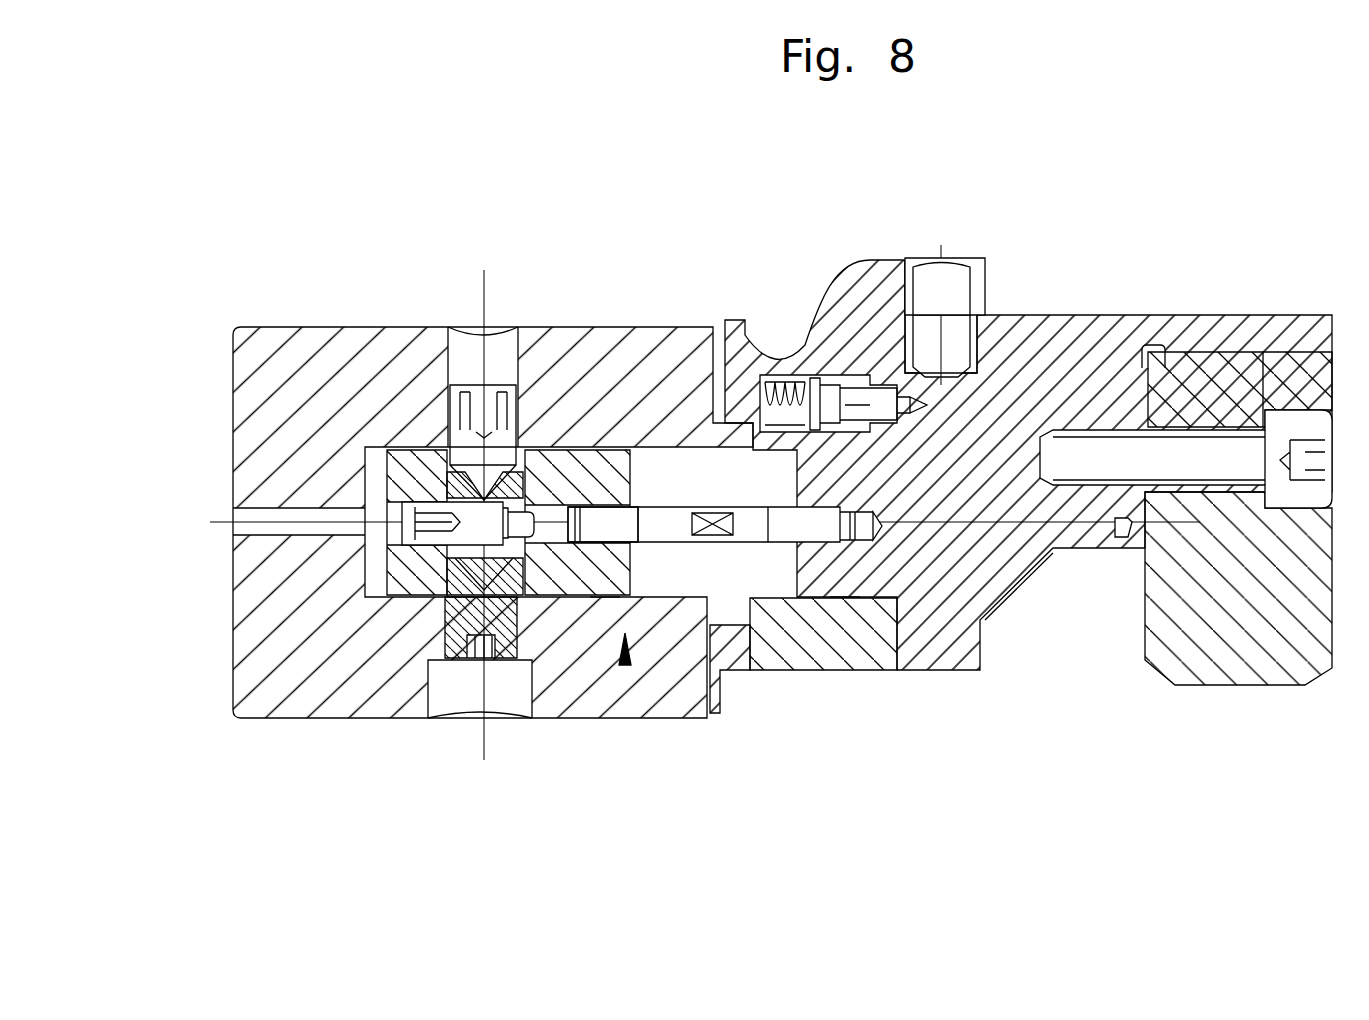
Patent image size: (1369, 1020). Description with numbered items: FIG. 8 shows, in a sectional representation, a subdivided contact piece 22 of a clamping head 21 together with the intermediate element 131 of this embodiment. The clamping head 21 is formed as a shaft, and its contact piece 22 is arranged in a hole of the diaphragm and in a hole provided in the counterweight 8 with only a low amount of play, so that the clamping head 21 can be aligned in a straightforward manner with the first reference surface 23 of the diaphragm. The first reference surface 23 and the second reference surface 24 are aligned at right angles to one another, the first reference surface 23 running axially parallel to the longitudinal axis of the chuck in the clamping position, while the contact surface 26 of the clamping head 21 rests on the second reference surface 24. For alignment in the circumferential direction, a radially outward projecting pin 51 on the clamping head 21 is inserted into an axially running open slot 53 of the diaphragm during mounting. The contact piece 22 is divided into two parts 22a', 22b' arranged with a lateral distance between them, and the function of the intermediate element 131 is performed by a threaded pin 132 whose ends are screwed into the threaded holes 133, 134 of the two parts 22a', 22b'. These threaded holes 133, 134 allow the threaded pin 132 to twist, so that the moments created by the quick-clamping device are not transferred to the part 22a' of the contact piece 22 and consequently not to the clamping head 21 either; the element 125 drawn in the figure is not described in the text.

The counterweight 8 is at (327, 327).
The clamping head 21 is at (1087, 312).
The contact piece 22 is at (379, 549).
The part of the contact piece 22a' is at (834, 727).
The part of the contact piece 22b' is at (582, 720).
The first reference surface 23 is at (1033, 338).
The second reference surface 24 is at (940, 268).
The contact surface 26 is at (857, 660).
The pin 51 is at (905, 298).
The open slot 53 is at (978, 283).
The coupling element 125 is at (712, 535).
The intermediate element 131 is at (625, 665).
The threaded pin 132 is at (662, 500).
The threaded hole 133 is at (822, 540).
The threaded hole 134 is at (548, 540).